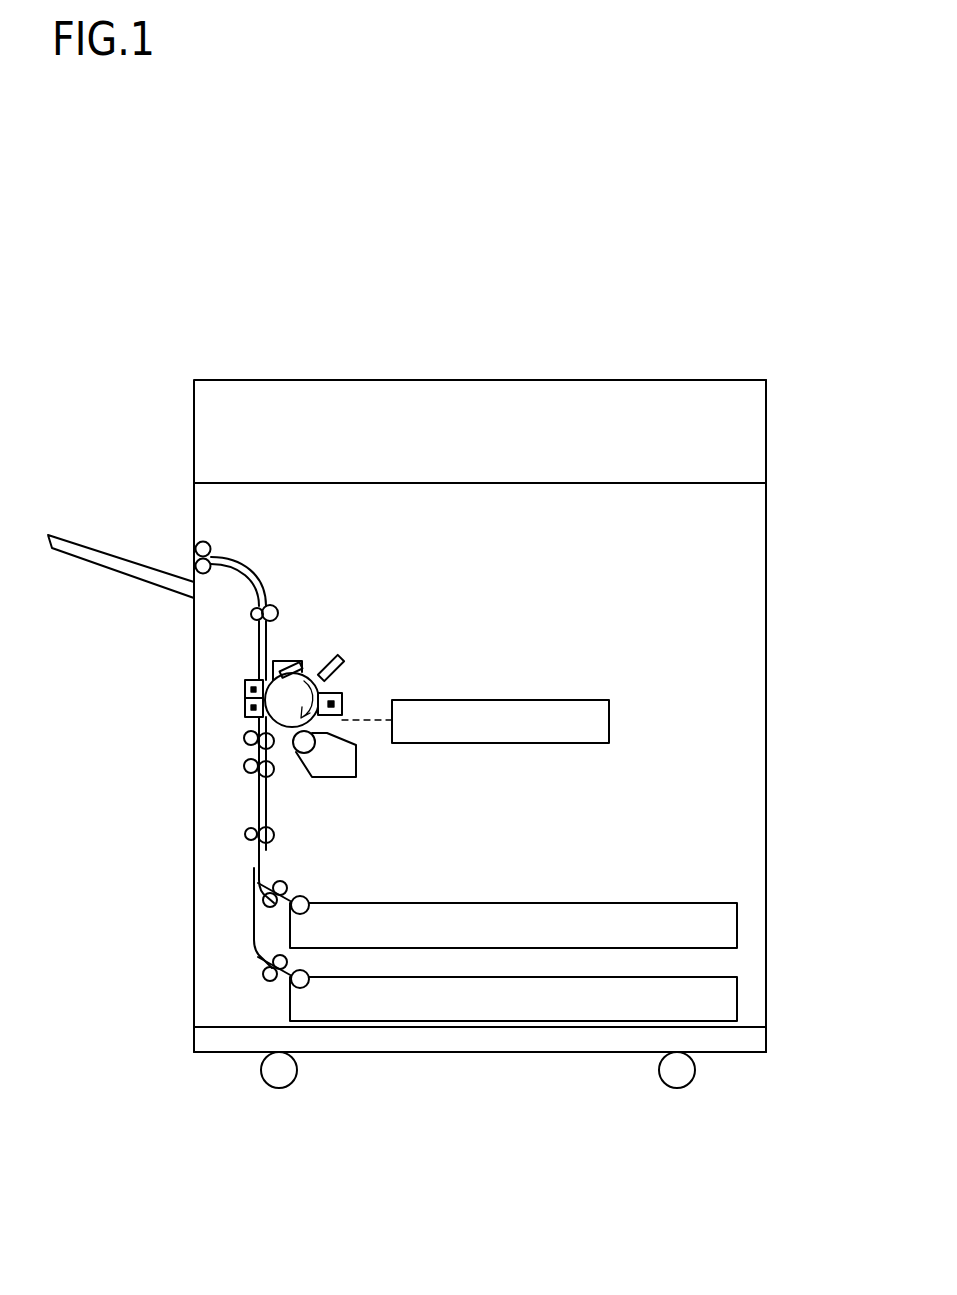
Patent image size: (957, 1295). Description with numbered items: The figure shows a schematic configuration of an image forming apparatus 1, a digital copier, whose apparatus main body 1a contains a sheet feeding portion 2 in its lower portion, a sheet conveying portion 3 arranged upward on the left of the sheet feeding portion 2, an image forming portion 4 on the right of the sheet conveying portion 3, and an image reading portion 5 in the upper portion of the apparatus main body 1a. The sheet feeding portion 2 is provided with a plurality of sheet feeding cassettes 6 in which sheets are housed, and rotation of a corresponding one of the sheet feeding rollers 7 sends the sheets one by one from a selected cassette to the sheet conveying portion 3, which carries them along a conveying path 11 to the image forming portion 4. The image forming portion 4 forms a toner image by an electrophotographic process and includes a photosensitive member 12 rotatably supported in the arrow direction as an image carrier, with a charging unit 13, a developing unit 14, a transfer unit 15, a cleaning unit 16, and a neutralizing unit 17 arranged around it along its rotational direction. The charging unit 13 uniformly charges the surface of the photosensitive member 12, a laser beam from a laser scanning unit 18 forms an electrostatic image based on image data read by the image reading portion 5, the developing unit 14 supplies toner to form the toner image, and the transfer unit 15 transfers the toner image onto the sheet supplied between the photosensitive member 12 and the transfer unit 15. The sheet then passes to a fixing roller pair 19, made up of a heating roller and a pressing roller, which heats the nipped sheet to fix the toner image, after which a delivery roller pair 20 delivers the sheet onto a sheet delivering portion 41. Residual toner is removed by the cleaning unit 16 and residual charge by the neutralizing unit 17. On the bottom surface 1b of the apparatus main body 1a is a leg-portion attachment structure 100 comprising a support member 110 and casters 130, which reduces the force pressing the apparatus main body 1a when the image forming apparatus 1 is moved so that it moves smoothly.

The image forming apparatus 1 is at (509, 363).
The apparatus main body 1a is at (768, 683).
The bottom surface 1b is at (745, 1026).
The sheet feeding portion 2 is at (662, 855).
The sheet conveying portion 3 is at (232, 749).
The image forming portion 4 is at (360, 673).
The image reading portion 5 is at (200, 432).
The sheet feeding cassettes 6 is at (602, 913).
The sheet feeding rollers 7 is at (308, 897).
The sheet conveying path 11 is at (262, 861).
The photosensitive member 12 is at (313, 675).
The charging unit 13 is at (343, 703).
The developing unit 14 is at (341, 772).
The transfer unit 15 is at (245, 691).
The cleaning unit 16 is at (286, 661).
The neutralizing unit 17 is at (345, 661).
The laser scanning unit 18 is at (516, 736).
The fixing roller pair 19 is at (242, 620).
The delivery roller pair 20 is at (195, 547).
The sheet delivering portion 41 is at (85, 530).
The leg-portion attachment structure 100 is at (177, 1022).
The support member 110 is at (375, 1055).
The casters 130 is at (262, 1086).